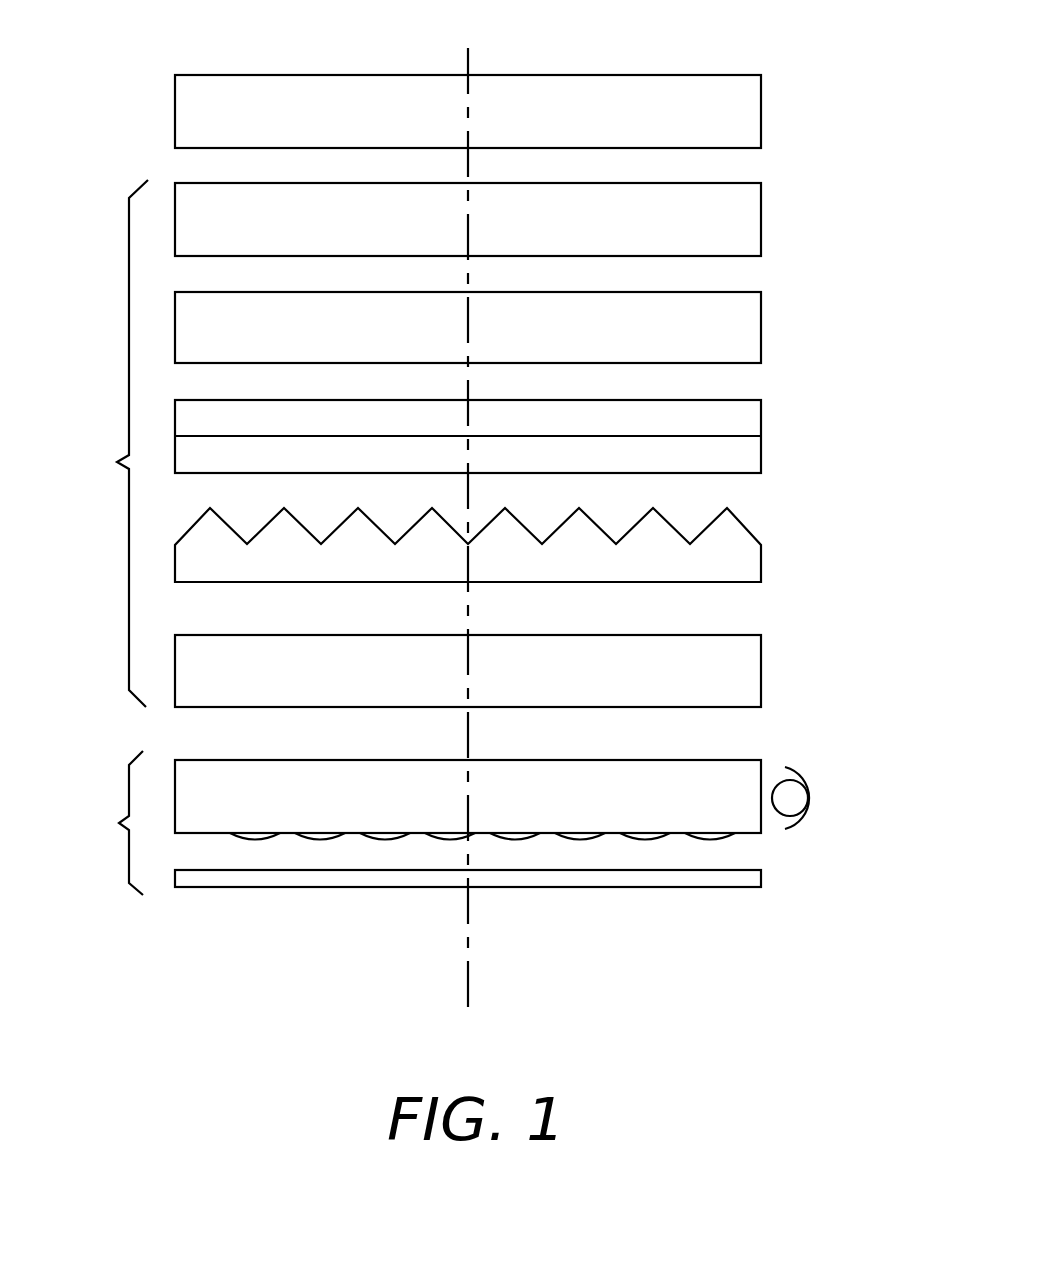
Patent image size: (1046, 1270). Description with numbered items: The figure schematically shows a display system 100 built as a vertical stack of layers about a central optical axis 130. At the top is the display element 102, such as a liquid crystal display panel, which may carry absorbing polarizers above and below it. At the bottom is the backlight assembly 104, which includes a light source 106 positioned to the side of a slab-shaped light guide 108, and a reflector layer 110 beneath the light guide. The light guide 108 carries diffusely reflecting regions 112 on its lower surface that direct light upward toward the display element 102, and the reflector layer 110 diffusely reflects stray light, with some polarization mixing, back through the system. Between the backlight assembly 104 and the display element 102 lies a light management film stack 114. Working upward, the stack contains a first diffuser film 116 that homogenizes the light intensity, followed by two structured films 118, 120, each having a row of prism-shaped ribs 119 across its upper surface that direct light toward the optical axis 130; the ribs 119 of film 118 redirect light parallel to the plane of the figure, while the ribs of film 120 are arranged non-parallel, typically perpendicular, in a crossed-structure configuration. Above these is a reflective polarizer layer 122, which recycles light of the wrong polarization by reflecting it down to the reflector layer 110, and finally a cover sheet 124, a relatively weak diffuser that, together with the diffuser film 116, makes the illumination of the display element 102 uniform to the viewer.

The display system 100 is at (292, 933).
The display element 102 is at (762, 108).
The backlight assembly 104 is at (100, 823).
The light source 106 is at (813, 783).
The light guide 108 is at (188, 758).
The reflector layer 110 is at (762, 876).
The diffusely reflecting regions 112 is at (712, 837).
The light management film stack 114 is at (102, 443).
The first diffuser film 116 is at (762, 672).
The structured film 118 is at (762, 564).
The prism-shaped ribs 119 is at (762, 412).
The structured film 120 is at (762, 457).
The reflective polarizer layer 122 is at (762, 325).
The cover sheet 124 is at (762, 220).
The optical axis 130 is at (468, 967).